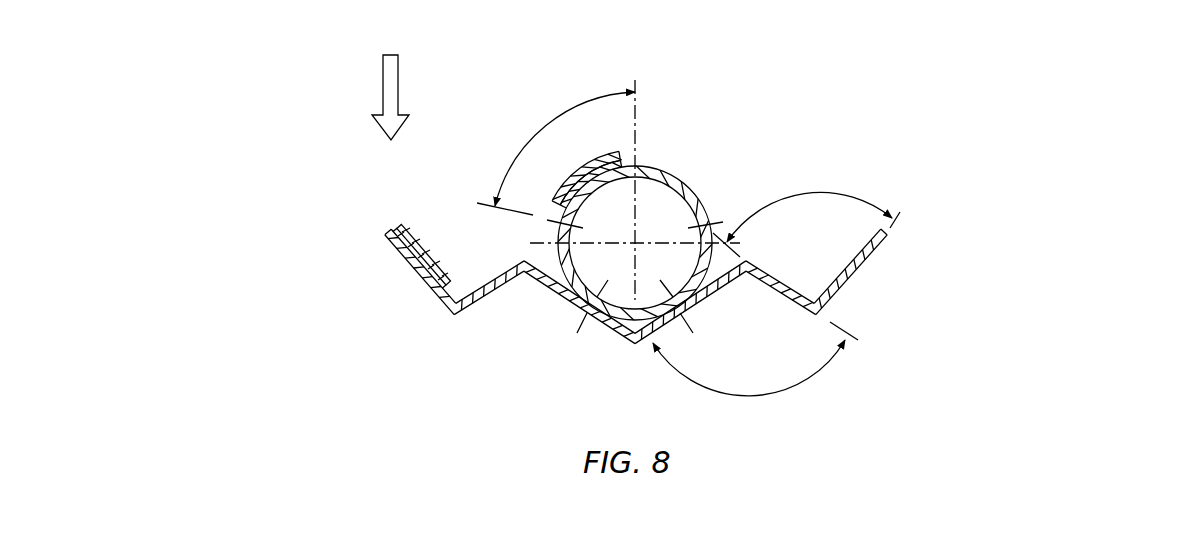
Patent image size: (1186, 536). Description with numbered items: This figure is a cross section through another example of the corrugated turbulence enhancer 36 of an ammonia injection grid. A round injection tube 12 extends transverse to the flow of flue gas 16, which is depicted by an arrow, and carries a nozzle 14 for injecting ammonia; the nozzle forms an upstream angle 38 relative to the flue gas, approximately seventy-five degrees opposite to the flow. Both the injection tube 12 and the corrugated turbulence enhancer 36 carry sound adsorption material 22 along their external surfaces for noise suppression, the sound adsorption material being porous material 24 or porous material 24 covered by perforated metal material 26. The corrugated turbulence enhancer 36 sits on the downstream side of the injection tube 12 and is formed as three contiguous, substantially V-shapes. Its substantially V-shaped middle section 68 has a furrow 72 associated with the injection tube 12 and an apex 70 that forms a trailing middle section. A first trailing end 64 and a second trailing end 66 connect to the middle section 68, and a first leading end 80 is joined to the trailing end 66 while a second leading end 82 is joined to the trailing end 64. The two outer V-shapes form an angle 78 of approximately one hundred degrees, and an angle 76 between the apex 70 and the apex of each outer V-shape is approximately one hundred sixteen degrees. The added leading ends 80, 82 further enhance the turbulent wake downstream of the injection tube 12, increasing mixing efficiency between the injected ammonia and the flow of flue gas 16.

The injection tube 12 is at (661, 171).
The nozzle 14 is at (556, 222).
The flow of flue gas 16 is at (392, 80).
The sound adsorption material 22 is at (266, 212).
The porous material 24 is at (387, 233).
The perforated metal material 26 is at (397, 221).
The corrugated turbulence enhancer 36 is at (793, 291).
The upstream angle 38 is at (556, 153).
The first trailing end 64 is at (818, 313).
The second trailing end 66 is at (455, 316).
The substantially V-shaped middle section 68 is at (586, 341).
The apex 70 is at (640, 345).
The furrow 72 is at (615, 336).
The angle 76 is at (755, 359).
The angle 78 is at (806, 213).
The first leading end 80 is at (386, 247).
The second leading end 82 is at (884, 244).